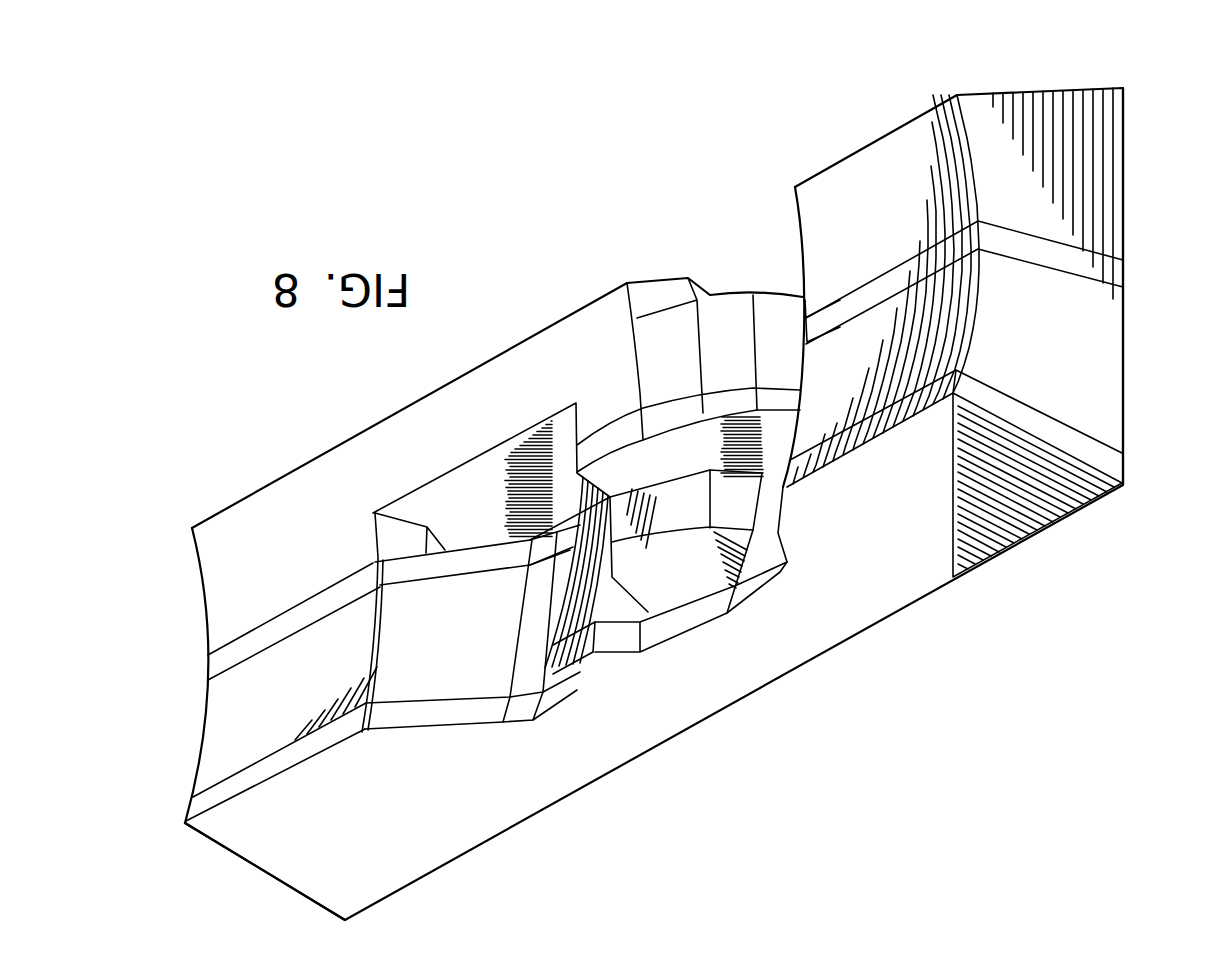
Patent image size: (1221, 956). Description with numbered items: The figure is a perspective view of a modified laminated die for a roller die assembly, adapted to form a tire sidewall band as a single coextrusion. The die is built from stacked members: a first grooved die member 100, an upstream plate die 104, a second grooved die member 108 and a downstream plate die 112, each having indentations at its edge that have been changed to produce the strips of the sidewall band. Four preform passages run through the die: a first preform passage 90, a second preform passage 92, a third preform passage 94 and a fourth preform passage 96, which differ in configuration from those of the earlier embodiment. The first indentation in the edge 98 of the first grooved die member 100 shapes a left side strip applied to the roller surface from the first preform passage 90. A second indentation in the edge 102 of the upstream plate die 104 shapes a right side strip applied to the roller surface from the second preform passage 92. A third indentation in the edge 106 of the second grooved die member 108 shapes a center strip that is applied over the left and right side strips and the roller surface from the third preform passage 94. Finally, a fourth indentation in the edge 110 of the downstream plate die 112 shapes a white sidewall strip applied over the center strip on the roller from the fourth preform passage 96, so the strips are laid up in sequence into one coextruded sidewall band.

The first preform passage 90 is at (723, 282).
The second preform passage 92 is at (530, 445).
The third preform passage 94 is at (690, 440).
The fourth preform passage 96 is at (670, 582).
The edge of first grooved die member 98 is at (770, 307).
The first grooved die member 100 is at (1020, 98).
The edge of upstream plate die 102 is at (478, 557).
The upstream plate die 104 is at (208, 668).
The edge of second grooved die member 106 is at (645, 507).
The second grooved die member 108 is at (1125, 328).
The edge of downstream plate die 110 is at (717, 605).
The downstream plate die 112 is at (210, 833).